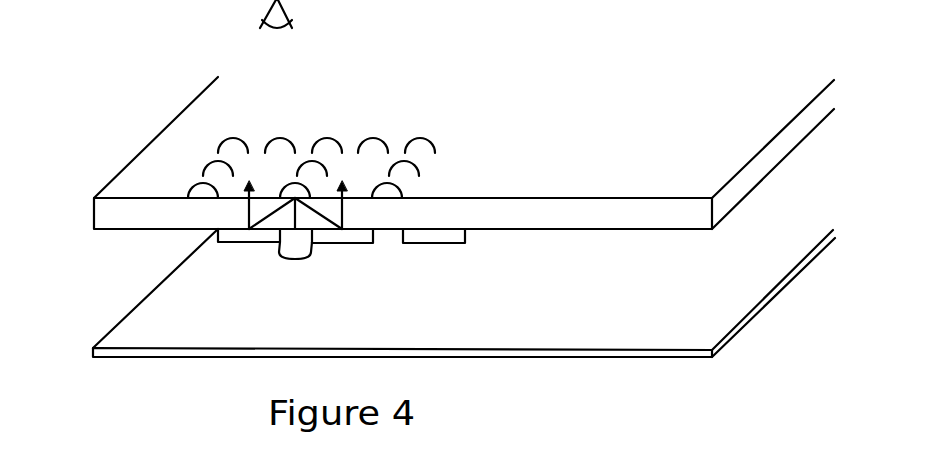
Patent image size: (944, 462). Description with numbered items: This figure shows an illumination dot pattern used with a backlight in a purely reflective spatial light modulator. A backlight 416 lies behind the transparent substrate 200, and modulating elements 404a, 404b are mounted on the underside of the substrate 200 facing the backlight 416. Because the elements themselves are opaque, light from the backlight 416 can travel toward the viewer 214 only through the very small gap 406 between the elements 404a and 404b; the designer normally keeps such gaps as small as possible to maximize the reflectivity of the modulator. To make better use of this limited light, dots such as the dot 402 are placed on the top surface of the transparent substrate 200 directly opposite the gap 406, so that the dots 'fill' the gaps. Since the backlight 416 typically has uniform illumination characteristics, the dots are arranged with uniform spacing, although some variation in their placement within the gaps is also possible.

The transparent substrate 200 is at (742, 201).
The viewer 214 is at (262, 25).
The dot 402 is at (295, 182).
The modulating element 404a is at (243, 243).
The modulating element 404b is at (340, 243).
The gap 406 is at (293, 259).
The backlight 416 is at (724, 346).